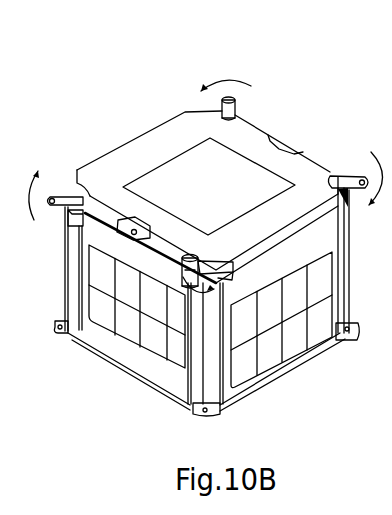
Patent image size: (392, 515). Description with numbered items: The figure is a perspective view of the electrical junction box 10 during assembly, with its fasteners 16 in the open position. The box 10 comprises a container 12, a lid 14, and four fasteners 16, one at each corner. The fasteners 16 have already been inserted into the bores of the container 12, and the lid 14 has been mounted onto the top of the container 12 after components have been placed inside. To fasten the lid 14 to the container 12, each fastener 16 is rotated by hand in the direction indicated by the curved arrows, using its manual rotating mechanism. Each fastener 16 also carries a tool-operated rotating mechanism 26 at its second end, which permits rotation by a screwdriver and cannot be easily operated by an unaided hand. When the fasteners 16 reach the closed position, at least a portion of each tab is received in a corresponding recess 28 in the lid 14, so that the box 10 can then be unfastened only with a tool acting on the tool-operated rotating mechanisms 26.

The electrical junction box 10 is at (134, 82).
The container 12 is at (72, 292).
The lid 14 is at (128, 160).
The fastener 16 is at (237, 109).
The tool-operated rotating mechanism 26 is at (190, 254).
The recess 28 is at (222, 280).